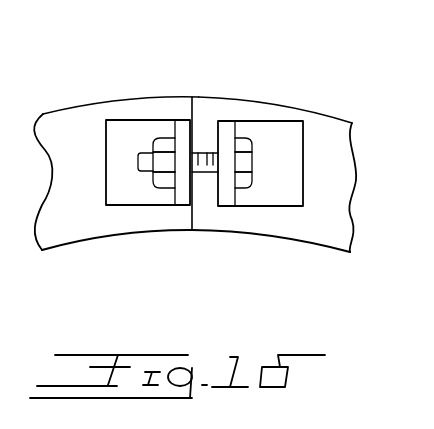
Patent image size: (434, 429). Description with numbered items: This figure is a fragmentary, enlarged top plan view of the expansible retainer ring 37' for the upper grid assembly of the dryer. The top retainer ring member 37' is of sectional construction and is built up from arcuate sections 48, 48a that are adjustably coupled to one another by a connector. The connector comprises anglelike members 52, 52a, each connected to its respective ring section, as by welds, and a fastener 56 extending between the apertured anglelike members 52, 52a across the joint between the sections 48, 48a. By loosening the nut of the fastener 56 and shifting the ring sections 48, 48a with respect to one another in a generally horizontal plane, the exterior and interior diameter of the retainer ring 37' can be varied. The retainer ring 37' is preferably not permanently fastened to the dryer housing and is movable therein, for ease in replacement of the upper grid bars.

The arcuate section 48 is at (72, 125).
The arcuate section 48a is at (323, 115).
The top retainer ring member 37' is at (229, 122).
The anglelike member 52 is at (142, 130).
The anglelike member 52a is at (290, 133).
The fastener 56 is at (252, 152).